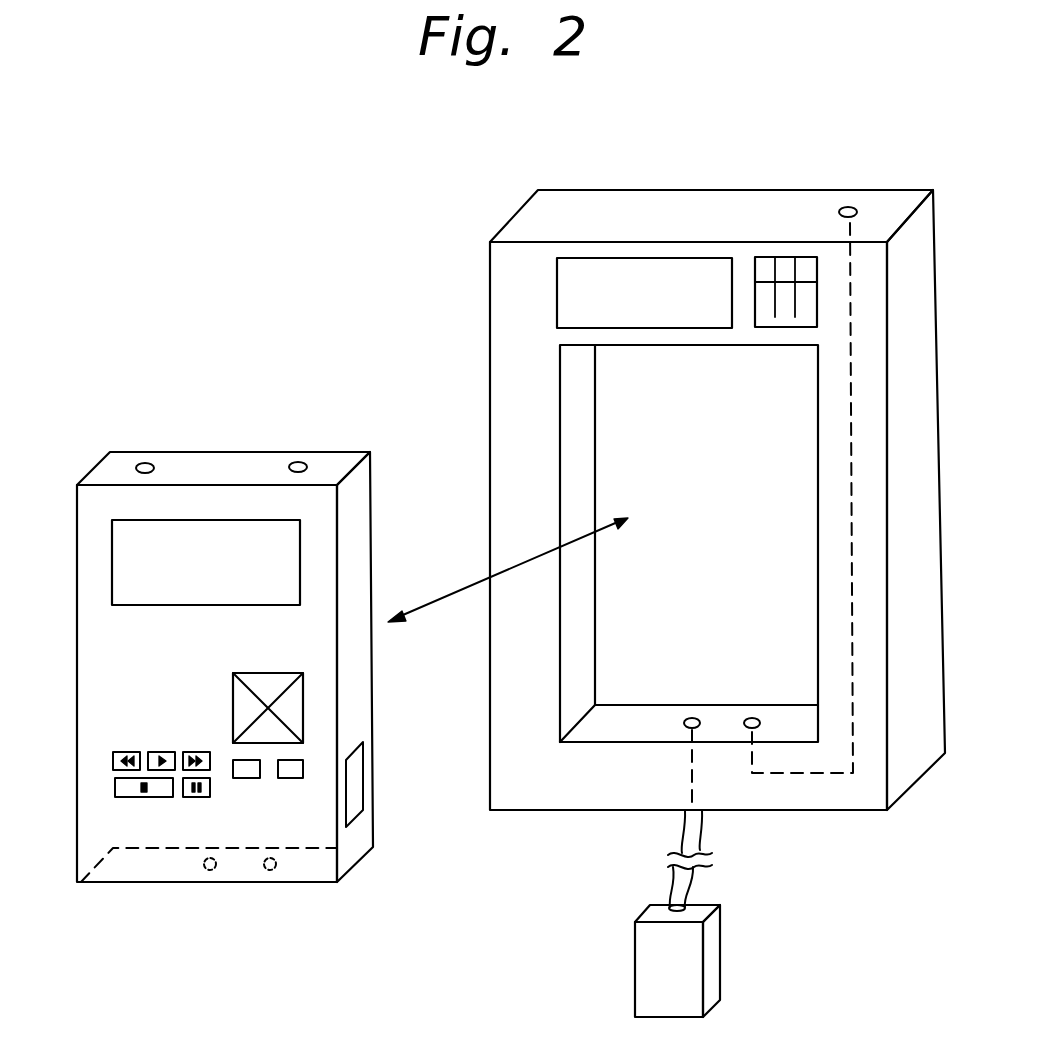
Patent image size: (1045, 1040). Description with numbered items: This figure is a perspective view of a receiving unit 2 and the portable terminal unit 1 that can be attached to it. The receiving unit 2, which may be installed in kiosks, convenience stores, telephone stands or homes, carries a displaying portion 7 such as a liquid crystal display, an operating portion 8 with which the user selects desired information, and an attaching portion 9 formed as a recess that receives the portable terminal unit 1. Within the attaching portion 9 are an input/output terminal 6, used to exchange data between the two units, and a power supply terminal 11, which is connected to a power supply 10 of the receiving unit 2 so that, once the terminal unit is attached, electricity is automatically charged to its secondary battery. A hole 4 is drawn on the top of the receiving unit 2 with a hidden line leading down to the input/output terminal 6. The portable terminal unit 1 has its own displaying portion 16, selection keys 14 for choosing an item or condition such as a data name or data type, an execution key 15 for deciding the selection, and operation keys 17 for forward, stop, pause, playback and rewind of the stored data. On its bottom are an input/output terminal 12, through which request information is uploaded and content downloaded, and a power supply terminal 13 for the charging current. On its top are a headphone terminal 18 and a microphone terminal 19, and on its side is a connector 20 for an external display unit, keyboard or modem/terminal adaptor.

The portable terminal unit 1 is at (229, 424).
The receiving unit 2 is at (465, 287).
The hole 4 is at (845, 205).
The input/output terminal 6 is at (743, 722).
The displaying portion 7 is at (643, 277).
The operating portion 8 is at (782, 275).
The attaching portion 9 is at (577, 465).
The power supply 10 is at (650, 912).
The power supply terminal 11 is at (683, 723).
The input/output terminal 12 is at (270, 873).
The power supply terminal 13 is at (210, 873).
The selection keys 14 is at (303, 708).
The execution key 15 is at (247, 778).
The displaying portion 16 is at (300, 561).
The operation keys 17 is at (165, 803).
The headphone terminal 18 is at (298, 462).
The microphone terminal 19 is at (143, 462).
The connector 20 is at (363, 790).